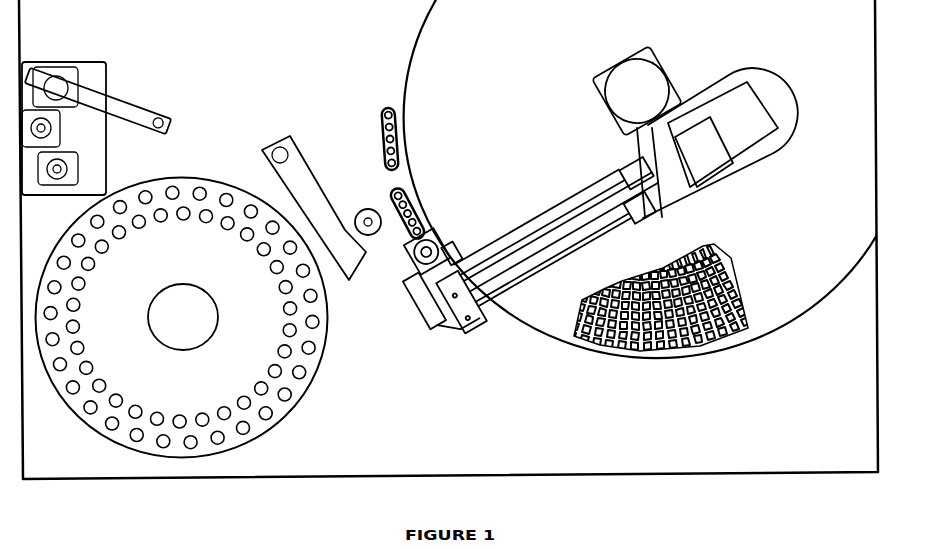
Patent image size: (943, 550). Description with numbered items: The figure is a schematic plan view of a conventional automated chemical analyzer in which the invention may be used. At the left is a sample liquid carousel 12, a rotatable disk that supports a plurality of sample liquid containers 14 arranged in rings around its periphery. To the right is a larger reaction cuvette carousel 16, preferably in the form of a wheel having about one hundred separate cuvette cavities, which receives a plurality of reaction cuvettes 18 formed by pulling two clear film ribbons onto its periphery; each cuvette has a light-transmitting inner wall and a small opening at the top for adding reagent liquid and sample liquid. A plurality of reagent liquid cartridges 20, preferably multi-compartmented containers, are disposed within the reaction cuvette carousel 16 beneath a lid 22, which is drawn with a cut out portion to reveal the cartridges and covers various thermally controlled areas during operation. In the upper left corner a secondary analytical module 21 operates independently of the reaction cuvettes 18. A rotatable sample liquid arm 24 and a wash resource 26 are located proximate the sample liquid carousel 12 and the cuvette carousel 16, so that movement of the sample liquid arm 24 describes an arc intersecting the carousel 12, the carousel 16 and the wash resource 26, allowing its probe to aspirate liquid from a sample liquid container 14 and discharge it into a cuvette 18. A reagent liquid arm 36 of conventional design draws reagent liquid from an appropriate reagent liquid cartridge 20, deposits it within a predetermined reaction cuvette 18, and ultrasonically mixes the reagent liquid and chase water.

The sample liquid carousel 12 is at (230, 377).
The sample liquid containers 14 is at (310, 349).
The reaction cuvette carousel 16 is at (535, 335).
The reaction cuvettes 18 is at (380, 130).
The reagent liquid cartridges 20 is at (745, 312).
The secondary analytical module 21 is at (134, 82).
The lid 22 is at (480, 98).
The sample liquid arm 24 is at (282, 173).
The wash resource 26 is at (372, 224).
The reagent liquid arm 36 is at (543, 222).